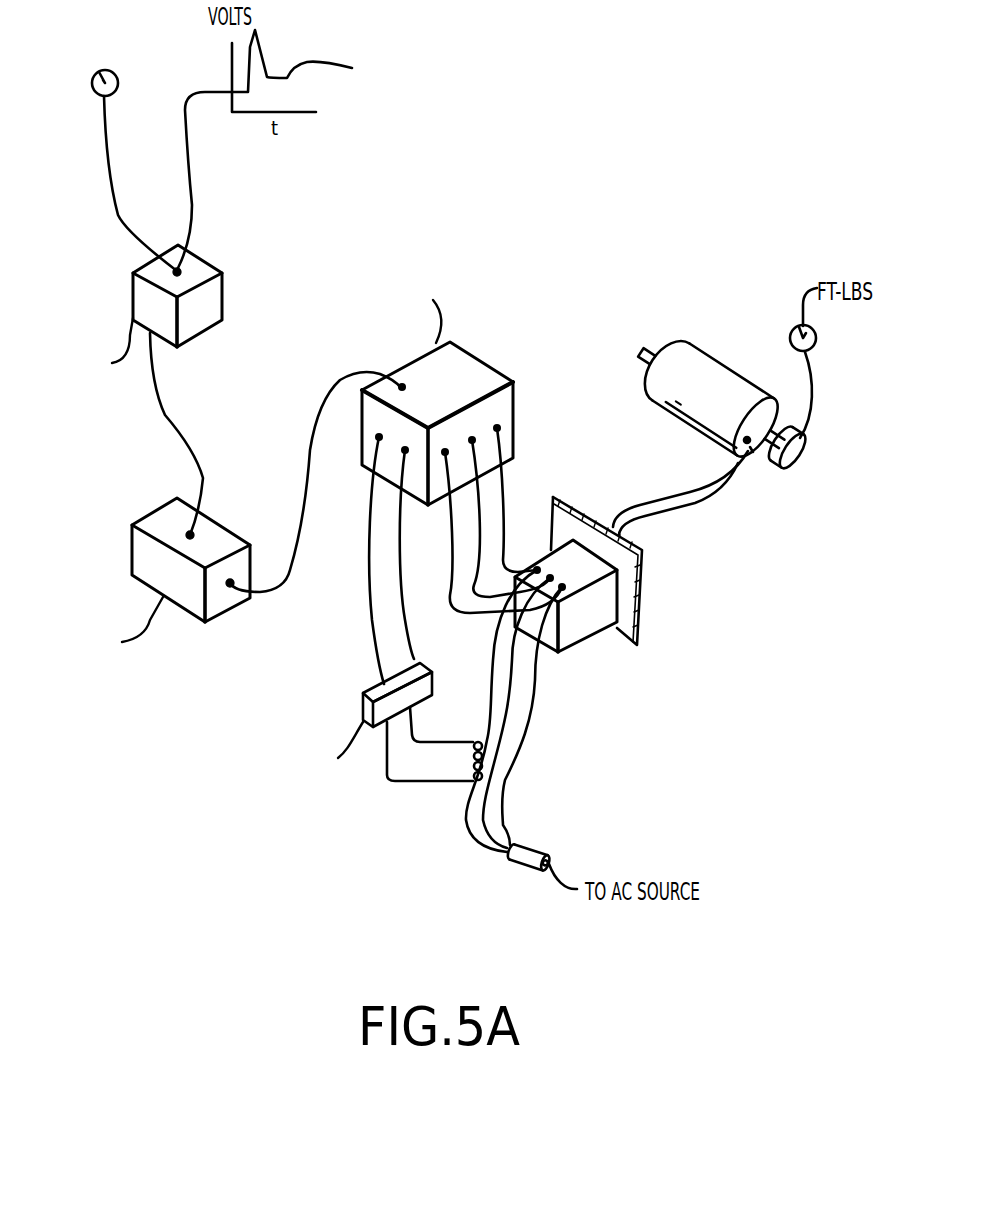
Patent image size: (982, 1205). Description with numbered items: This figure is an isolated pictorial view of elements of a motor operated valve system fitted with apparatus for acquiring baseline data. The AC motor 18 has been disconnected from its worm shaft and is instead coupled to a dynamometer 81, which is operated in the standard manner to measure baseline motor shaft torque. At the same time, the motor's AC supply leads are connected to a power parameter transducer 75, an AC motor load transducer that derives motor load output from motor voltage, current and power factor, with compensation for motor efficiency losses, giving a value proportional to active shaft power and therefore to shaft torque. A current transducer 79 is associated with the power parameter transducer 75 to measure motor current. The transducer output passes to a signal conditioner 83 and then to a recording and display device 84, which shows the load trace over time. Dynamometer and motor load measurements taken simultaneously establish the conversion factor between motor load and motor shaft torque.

The motor 18 is at (728, 380).
The power parameter transducer 75 is at (488, 367).
The current transducer 79 is at (435, 681).
The dynamometer 81 is at (801, 460).
The signal conditioner 83 is at (238, 528).
The display device 84 is at (220, 310).